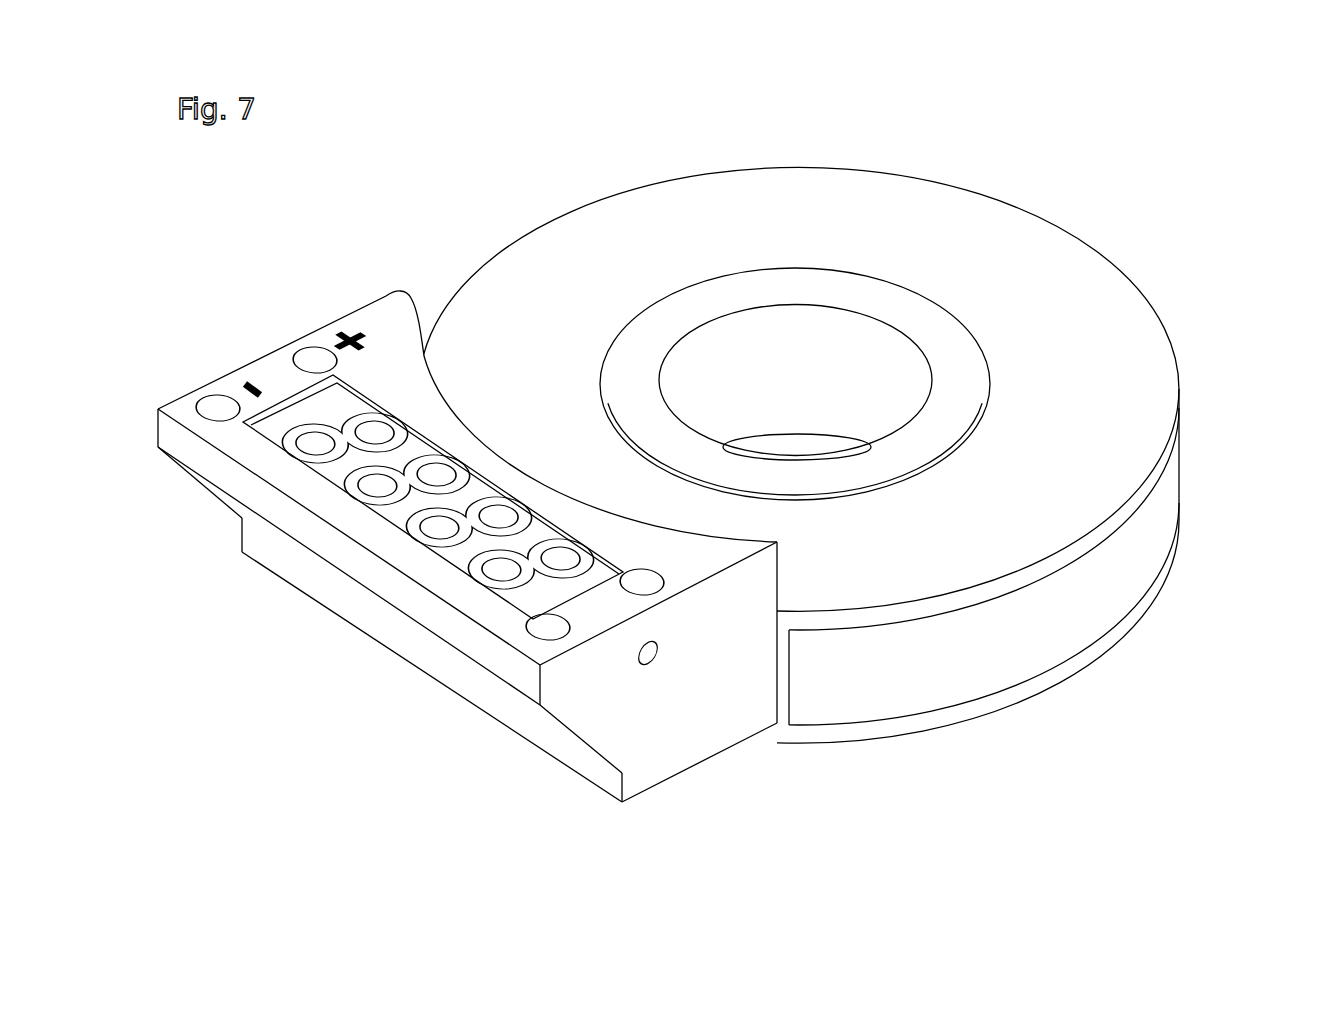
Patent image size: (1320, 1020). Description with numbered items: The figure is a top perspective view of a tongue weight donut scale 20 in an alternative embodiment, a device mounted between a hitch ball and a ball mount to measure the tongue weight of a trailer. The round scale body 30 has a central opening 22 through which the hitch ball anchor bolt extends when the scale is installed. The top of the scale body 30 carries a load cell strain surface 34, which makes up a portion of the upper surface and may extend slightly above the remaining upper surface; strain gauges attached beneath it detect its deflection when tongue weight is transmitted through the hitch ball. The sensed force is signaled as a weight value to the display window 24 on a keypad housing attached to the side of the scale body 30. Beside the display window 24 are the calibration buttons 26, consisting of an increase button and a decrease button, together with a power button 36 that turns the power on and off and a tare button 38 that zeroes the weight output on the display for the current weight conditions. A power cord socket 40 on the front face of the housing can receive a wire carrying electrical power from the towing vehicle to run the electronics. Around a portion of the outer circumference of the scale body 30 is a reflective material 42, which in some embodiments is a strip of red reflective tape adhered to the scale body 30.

The tongue weight donut scale 20 is at (1083, 168).
The opening 22 is at (780, 447).
The display window 24 is at (395, 512).
The calibration buttons 26 is at (315, 360).
The scale body 30 is at (1093, 528).
The load cell strain surface 34 is at (735, 294).
The power button 36 is at (638, 580).
The tare button 38 is at (548, 627).
The power cord socket 40 is at (657, 660).
The reflective material 42 is at (982, 653).